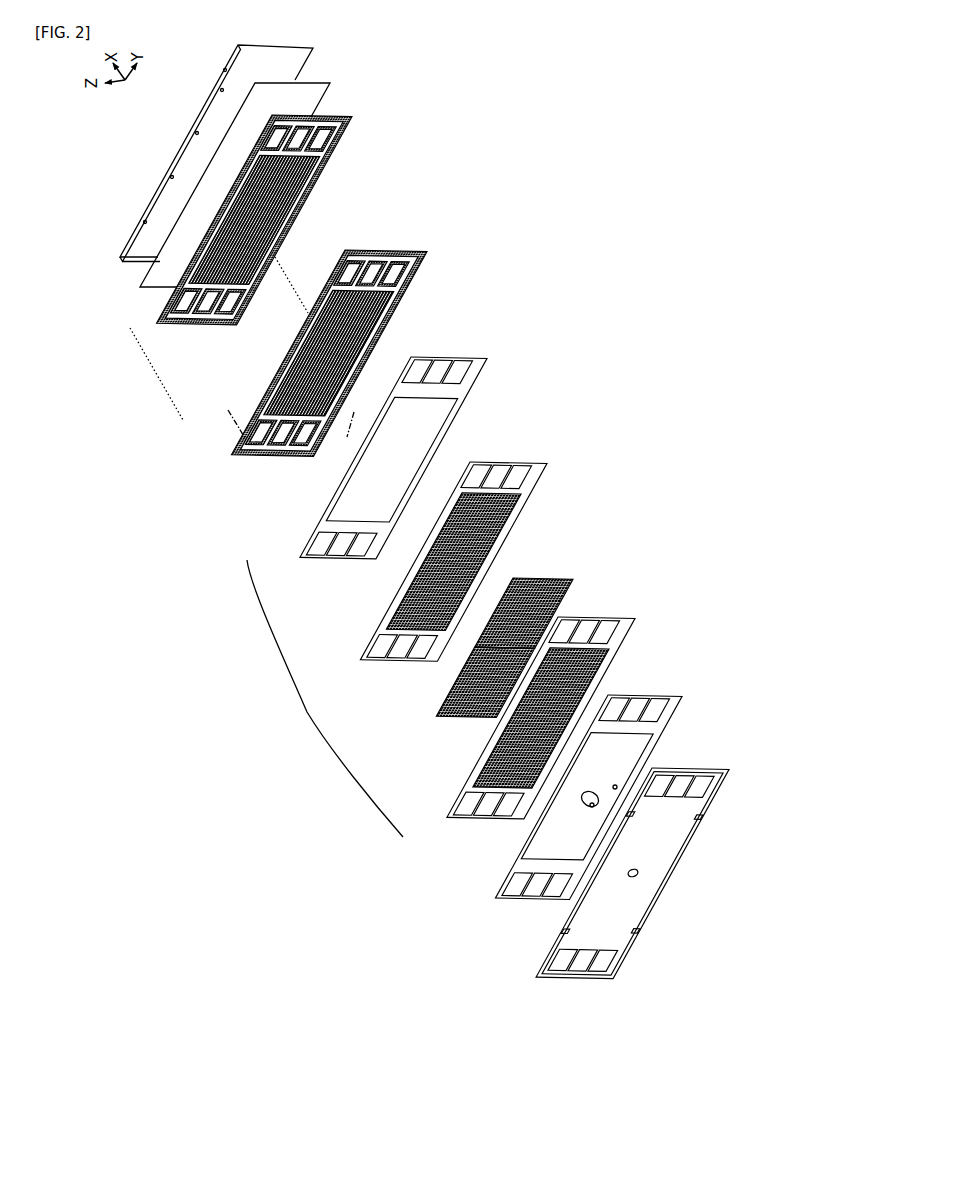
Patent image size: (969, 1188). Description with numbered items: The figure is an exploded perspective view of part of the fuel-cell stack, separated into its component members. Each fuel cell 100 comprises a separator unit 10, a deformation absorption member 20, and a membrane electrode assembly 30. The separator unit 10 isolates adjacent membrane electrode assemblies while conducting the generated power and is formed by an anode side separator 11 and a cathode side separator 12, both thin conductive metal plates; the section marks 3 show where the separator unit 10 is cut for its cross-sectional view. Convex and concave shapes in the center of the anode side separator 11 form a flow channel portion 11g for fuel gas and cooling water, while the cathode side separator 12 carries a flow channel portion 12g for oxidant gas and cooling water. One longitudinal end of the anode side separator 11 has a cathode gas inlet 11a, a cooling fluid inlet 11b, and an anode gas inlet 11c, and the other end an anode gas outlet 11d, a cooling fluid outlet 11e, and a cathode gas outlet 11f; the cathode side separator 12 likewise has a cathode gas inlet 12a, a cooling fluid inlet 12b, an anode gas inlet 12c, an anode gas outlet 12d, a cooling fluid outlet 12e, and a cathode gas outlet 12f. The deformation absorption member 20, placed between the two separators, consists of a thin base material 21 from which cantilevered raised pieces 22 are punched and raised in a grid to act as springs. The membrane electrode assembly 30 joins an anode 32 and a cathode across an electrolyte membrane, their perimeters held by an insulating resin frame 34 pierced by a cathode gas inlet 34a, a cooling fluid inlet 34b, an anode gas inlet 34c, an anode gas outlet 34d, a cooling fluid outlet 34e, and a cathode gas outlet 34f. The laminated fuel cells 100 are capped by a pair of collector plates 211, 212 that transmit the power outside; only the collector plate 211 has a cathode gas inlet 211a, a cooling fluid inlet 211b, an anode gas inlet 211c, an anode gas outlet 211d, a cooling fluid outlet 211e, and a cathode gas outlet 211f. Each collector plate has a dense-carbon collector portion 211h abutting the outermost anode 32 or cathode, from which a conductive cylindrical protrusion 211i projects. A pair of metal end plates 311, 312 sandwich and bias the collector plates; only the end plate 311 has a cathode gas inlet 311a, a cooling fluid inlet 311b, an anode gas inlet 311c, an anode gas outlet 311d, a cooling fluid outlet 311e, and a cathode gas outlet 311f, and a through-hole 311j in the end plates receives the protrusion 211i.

The fuel cell 100 is at (228, 454).
The section line III-III 3 is at (289, 418).
The separator unit 10 is at (446, 818).
The anode side separator 11 is at (469, 564).
The cathode gas inlet 11a is at (376, 658).
The cooling fluid inlet 11b is at (396, 659).
The anode gas inlet 11c is at (416, 659).
The anode gas outlet 11d is at (484, 465).
The cooling fluid outlet 11e is at (504, 466).
The cathode gas outlet 11f is at (524, 466).
The flow channel portion 11g is at (403, 603).
The cathode side separator 12 is at (568, 710).
The cathode gas inlet 12a is at (255, 452).
The cooling fluid inlet 12b is at (277, 453).
The anode gas inlet 12c is at (298, 454).
The anode gas outlet 12d is at (362, 252).
The cooling fluid outlet 12e is at (384, 253).
The cathode gas outlet 12f is at (406, 254).
The flow channel portion 12g is at (484, 770).
The deformation absorption member 20 is at (480, 633).
The base material 21 is at (513, 577).
The raised pieces 22 is at (543, 582).
The membrane electrode assembly 30 is at (384, 465).
The anode 32 is at (436, 423).
The frame 34 is at (470, 391).
The cathode gas inlet 34a is at (315, 556).
The cooling fluid inlet 34b is at (335, 557).
The anode gas inlet 34c is at (355, 557).
The anode gas outlet 34d is at (424, 360).
The cooling fluid outlet 34e is at (444, 360).
The cathode gas outlet 34f is at (464, 361).
The collector plate 211 is at (590, 787).
The cathode gas inlet 211a is at (511, 895).
The cooling fluid inlet 211b is at (531, 896).
The anode gas inlet 211c is at (551, 896).
The anode gas outlet 211d is at (622, 698).
The cooling fluid outlet 211e is at (642, 699).
The cathode gas outlet 211f is at (662, 699).
The collector portion 211h is at (616, 789).
The protrusion 211i is at (598, 806).
The collector plate 212 is at (145, 287).
The end plate 311 is at (623, 880).
The cathode gas inlet 311a is at (551, 975).
The cooling fluid inlet 311b is at (571, 975).
The anode gas inlet 311c is at (591, 975).
The anode gas outlet 311d is at (668, 772).
The cooling fluid outlet 311e is at (688, 773).
The cathode gas outlet 311f is at (708, 773).
The through-hole 311j is at (635, 878).
The end plate 312 is at (122, 257).